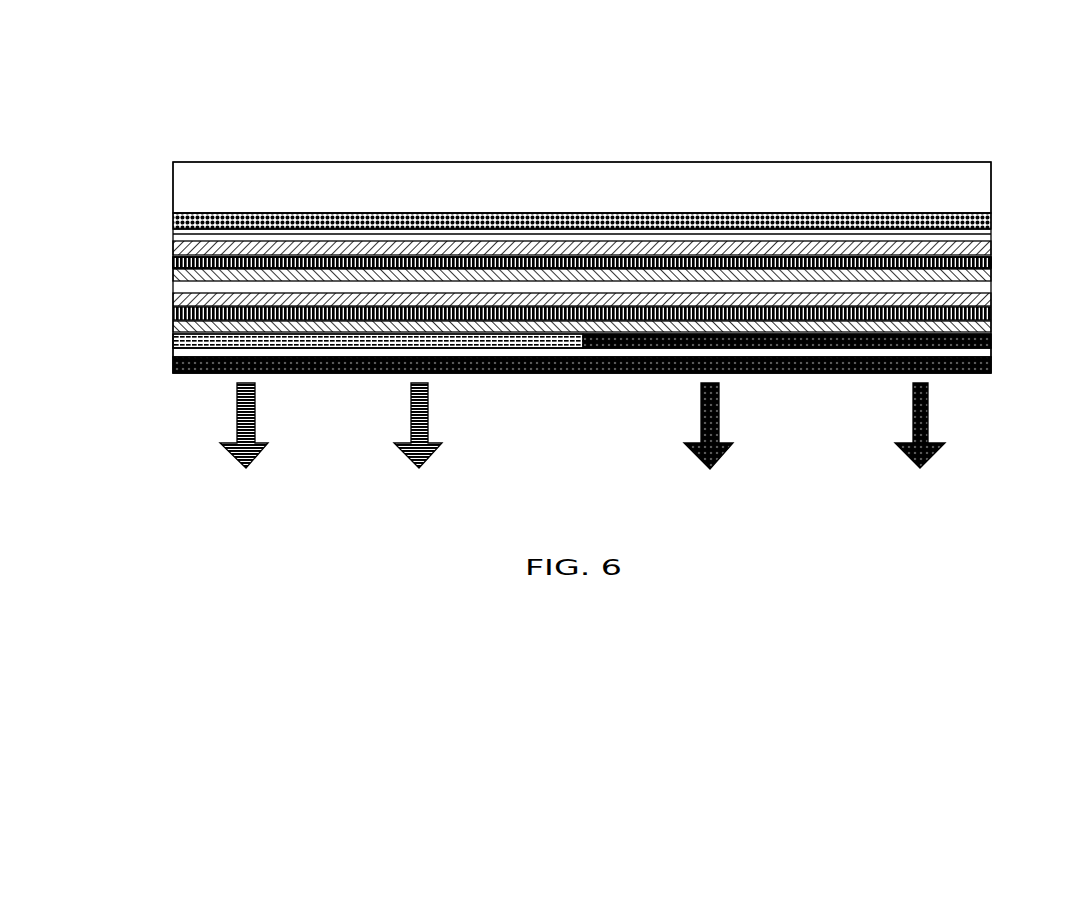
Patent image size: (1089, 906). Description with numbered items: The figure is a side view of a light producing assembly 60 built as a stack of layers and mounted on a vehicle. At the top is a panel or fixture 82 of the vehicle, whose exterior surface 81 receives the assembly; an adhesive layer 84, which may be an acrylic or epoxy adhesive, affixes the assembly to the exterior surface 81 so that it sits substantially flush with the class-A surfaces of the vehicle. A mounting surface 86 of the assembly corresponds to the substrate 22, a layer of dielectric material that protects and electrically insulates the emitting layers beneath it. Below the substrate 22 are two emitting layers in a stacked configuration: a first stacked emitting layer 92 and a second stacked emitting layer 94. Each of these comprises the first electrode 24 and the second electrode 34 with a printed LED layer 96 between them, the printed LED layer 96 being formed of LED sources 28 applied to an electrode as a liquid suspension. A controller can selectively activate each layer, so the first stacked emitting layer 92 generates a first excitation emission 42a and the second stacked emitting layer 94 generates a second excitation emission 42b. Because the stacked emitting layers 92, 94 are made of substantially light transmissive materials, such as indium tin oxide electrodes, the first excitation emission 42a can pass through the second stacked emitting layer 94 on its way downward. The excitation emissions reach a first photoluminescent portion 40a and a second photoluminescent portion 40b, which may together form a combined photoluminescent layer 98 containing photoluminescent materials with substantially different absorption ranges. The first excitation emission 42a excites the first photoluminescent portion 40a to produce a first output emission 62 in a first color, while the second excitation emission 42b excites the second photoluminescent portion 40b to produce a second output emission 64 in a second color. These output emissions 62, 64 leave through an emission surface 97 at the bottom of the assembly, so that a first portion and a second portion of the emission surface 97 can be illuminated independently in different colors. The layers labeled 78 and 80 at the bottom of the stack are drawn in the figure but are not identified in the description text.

The light producing assembly 60 is at (712, 80).
The panel or fixture 82 is at (178, 180).
The adhesive layer 84 is at (175, 220).
The exterior surface 81 is at (282, 215).
The mounting surface 86 is at (353, 230).
The substrate 22 is at (180, 235).
The first electrode 24 is at (180, 248).
The LED sources 28 is at (172, 262).
The printed LED layer 96 is at (582, 262).
The second electrode 34 is at (175, 305).
The first excitation emission 42a is at (870, 265).
The second excitation emission 42b is at (873, 318).
The first stacked emitting layer 92 is at (560, 234).
The second stacked emitting layer 94 is at (594, 279).
The first photoluminescent portion 40a is at (175, 342).
The second photoluminescent portion 40b is at (957, 347).
The combined photoluminescent layer 98 is at (582, 341).
The gap layer 78 is at (233, 353).
The emission surface 97 is at (518, 377).
The back layer 80 is at (646, 375).
The first output emission 62 is at (256, 417).
The second output emission 64 is at (701, 419).